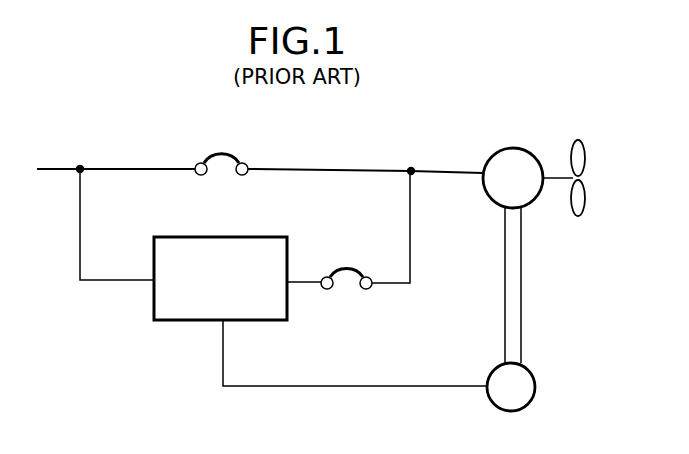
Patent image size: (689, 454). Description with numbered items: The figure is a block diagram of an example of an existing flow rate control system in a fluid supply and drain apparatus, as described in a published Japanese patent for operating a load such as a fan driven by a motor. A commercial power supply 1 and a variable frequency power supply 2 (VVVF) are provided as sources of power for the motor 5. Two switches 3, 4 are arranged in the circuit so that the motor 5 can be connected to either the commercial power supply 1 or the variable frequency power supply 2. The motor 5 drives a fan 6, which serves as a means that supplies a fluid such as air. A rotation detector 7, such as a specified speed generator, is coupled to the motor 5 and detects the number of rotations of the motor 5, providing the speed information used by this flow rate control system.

The commercial power supply 1 is at (56, 168).
The variable frequency power supply 2 is at (181, 309).
The switch 3 is at (229, 149).
The switch 4 is at (349, 260).
The motor 5 is at (516, 160).
The fan 6 is at (580, 148).
The rotation detector 7 is at (525, 390).